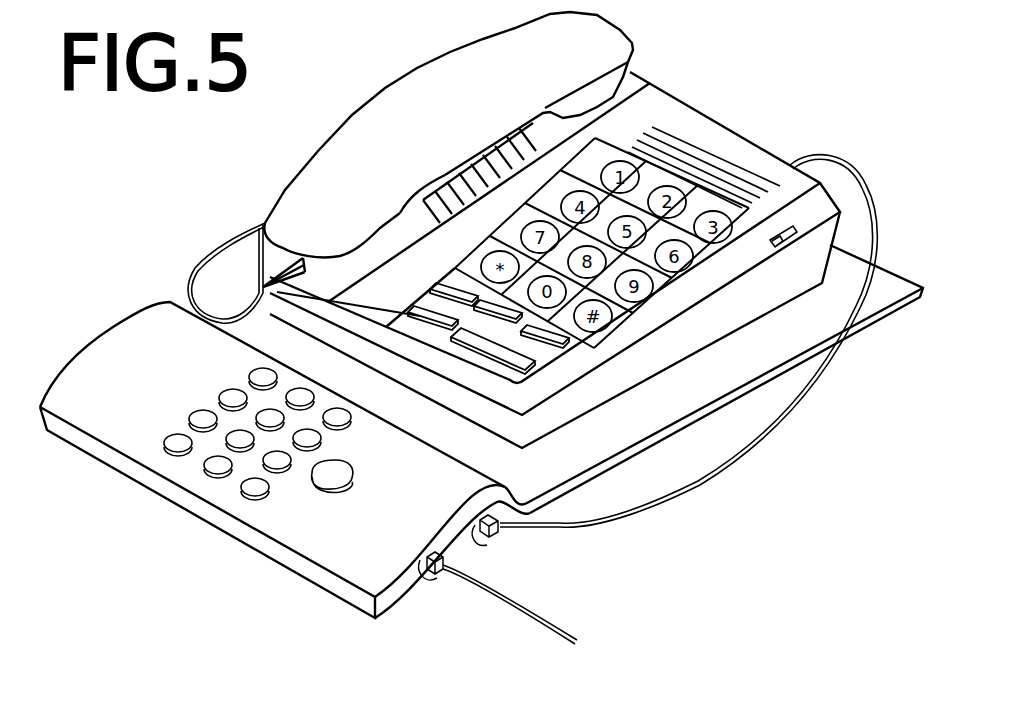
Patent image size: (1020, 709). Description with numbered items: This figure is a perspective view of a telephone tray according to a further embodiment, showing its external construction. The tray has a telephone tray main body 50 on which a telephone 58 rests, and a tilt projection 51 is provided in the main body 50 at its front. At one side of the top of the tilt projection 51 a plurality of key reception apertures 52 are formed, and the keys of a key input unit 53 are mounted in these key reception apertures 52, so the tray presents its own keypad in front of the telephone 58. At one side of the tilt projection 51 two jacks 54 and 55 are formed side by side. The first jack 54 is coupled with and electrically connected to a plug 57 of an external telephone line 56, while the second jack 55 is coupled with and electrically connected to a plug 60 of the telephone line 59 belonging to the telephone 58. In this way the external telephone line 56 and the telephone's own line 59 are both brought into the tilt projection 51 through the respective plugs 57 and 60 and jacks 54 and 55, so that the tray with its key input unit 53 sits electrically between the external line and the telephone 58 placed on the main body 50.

The telephone tray main body 50 is at (885, 325).
The tilt projection 51 is at (340, 562).
The key reception apertures 52 is at (207, 475).
The key input unit 53 is at (280, 473).
The jack 54 is at (433, 553).
The jack 55 is at (490, 533).
The external telephone line 56 is at (478, 583).
The plug 57 is at (432, 575).
The telephone 58 is at (745, 130).
The telephone line 59 is at (746, 443).
The plug 60 is at (500, 537).